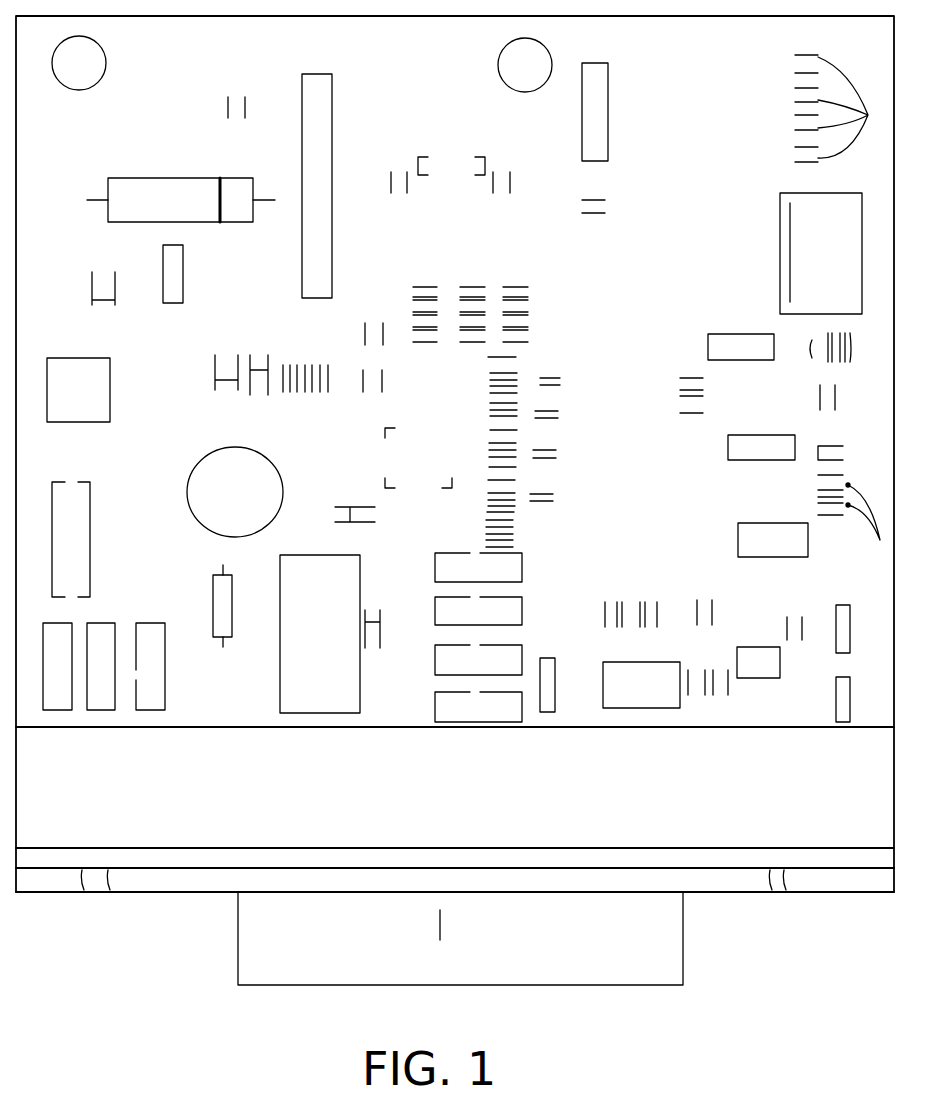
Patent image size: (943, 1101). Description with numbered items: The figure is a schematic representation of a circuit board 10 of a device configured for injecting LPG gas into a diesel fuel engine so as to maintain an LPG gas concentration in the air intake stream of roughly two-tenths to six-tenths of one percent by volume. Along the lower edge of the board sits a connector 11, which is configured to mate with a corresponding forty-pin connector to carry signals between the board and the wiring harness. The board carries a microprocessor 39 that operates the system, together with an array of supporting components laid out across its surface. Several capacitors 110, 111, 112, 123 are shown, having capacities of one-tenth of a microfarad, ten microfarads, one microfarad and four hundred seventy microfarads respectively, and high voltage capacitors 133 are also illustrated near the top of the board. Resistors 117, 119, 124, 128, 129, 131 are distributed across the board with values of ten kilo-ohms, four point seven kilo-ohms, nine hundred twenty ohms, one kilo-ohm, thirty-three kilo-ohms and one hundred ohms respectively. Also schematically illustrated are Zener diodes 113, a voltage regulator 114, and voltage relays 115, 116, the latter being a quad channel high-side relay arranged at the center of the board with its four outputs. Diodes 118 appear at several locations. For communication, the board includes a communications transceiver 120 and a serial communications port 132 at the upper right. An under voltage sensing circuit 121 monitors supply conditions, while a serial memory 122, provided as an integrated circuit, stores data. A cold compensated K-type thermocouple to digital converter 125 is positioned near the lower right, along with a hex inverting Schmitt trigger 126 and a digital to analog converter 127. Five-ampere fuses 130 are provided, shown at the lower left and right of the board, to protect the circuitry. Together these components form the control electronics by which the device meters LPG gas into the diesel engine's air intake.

The circuit board 10 is at (28, 942).
The connector 11 is at (238, 942).
The microprocessor 39 is at (333, 80).
The capacitor 110 is at (233, 90).
The capacitor 111 is at (90, 270).
The capacitor 112 is at (92, 545).
The Zener diode 113 is at (138, 178).
The voltage regulator 114 is at (75, 357).
The voltage relay 115 is at (280, 675).
The voltage relay 116 is at (388, 455).
The resistor 117 is at (413, 329).
The diode 118 is at (212, 378).
The resistor 119 is at (513, 545).
The communications transceiver 120 is at (609, 72).
The under voltage sensing circuit 121 is at (184, 275).
The serial memory 122 is at (738, 530).
The capacitor 123 is at (187, 483).
The resistor 124 is at (213, 576).
The thermocouple to digital converter 125 is at (770, 678).
The hex inverting Schmitt trigger 126 is at (728, 445).
The digital to analog converter 127 is at (718, 333).
The resistor 128 is at (828, 410).
The resistor 129 is at (850, 358).
The fuse 130 is at (167, 682).
The resistor 131 is at (715, 605).
The RS 232 communications port 132 is at (778, 226).
The high voltage capacitor 133 is at (398, 167).